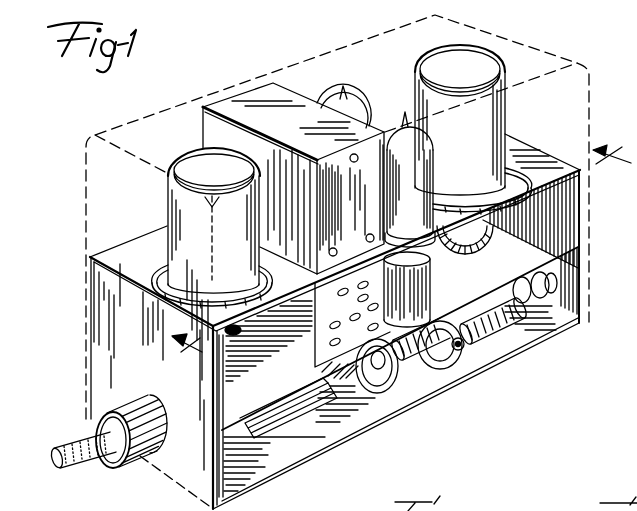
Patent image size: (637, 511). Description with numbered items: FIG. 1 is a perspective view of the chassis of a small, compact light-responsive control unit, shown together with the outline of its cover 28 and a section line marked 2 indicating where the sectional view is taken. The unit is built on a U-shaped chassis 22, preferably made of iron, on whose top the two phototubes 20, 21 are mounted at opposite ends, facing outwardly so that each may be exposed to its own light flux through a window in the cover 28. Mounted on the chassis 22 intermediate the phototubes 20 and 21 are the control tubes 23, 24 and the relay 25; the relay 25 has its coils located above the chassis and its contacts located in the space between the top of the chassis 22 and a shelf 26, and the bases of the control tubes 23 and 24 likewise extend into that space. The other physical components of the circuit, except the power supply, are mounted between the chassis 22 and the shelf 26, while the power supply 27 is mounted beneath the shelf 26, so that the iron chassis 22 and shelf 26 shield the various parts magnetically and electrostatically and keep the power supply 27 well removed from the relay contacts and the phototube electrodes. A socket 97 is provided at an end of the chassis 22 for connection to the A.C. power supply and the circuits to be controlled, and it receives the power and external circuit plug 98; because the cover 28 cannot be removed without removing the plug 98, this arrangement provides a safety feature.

The section line 2- 2 is at (394, 247).
The phototube 20 is at (191, 162).
The phototube 21 is at (442, 57).
The U-shaped chassis 22 is at (568, 153).
The control tube 23 is at (404, 121).
The control tube 24 is at (346, 97).
The relay 25 is at (243, 108).
The shelf 26 is at (577, 248).
The power supply 27 is at (570, 286).
The cover 28 is at (87, 180).
The socket 97 is at (527, 304).
The power and external circuit plug 98 is at (127, 461).